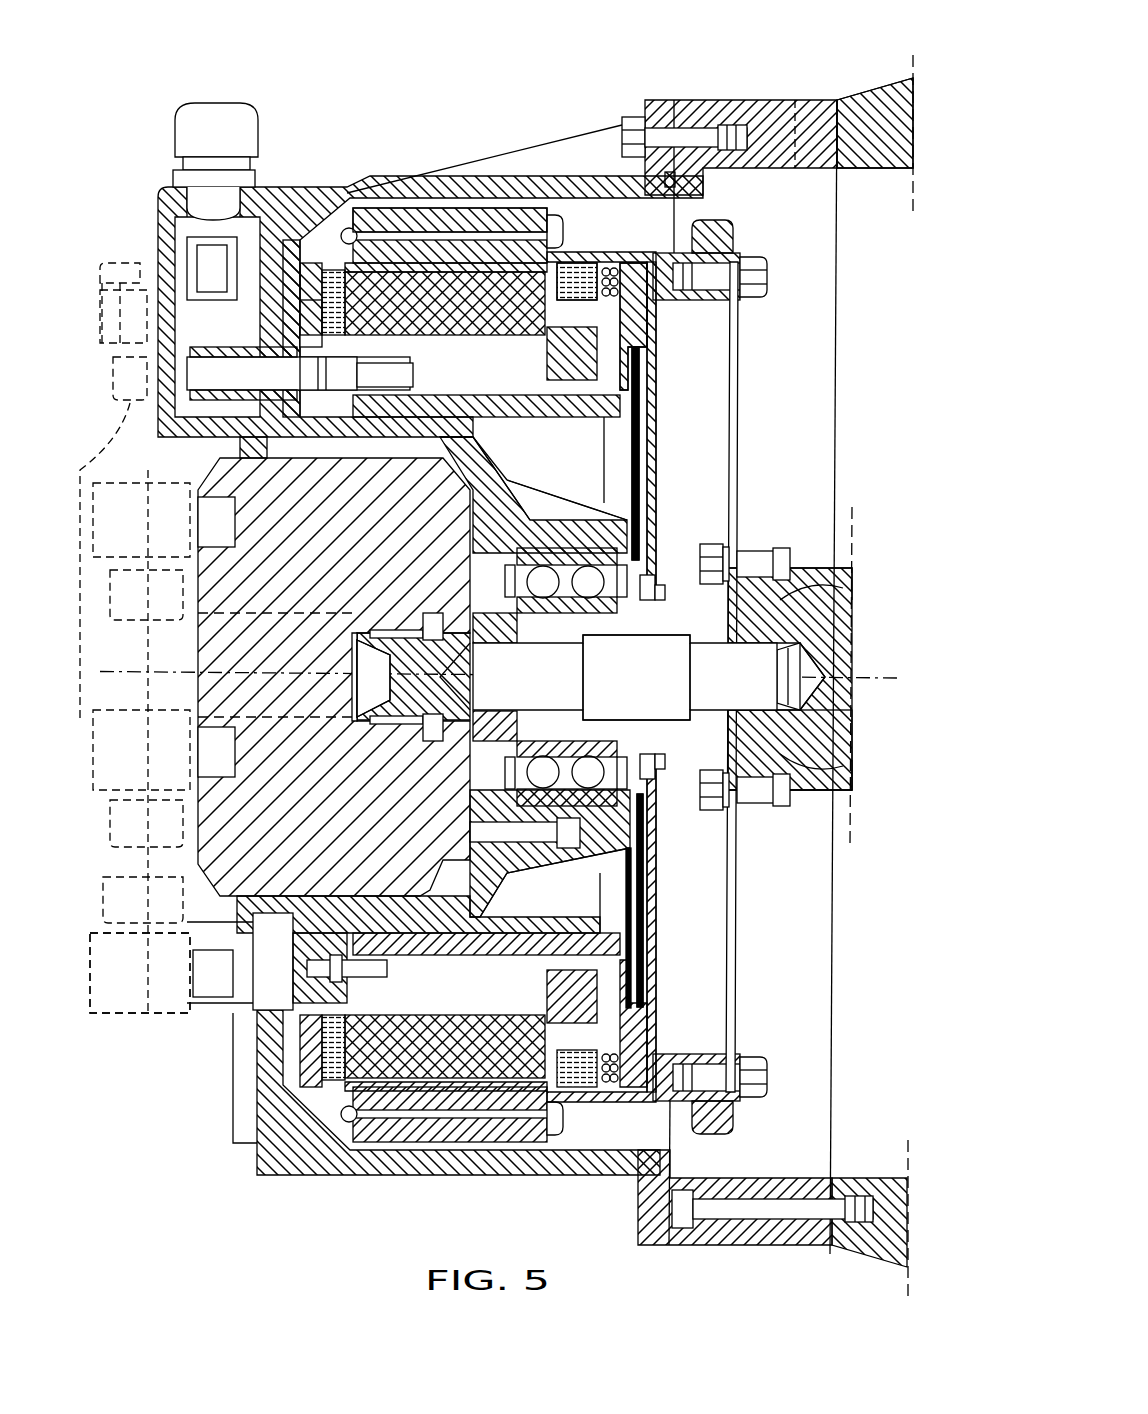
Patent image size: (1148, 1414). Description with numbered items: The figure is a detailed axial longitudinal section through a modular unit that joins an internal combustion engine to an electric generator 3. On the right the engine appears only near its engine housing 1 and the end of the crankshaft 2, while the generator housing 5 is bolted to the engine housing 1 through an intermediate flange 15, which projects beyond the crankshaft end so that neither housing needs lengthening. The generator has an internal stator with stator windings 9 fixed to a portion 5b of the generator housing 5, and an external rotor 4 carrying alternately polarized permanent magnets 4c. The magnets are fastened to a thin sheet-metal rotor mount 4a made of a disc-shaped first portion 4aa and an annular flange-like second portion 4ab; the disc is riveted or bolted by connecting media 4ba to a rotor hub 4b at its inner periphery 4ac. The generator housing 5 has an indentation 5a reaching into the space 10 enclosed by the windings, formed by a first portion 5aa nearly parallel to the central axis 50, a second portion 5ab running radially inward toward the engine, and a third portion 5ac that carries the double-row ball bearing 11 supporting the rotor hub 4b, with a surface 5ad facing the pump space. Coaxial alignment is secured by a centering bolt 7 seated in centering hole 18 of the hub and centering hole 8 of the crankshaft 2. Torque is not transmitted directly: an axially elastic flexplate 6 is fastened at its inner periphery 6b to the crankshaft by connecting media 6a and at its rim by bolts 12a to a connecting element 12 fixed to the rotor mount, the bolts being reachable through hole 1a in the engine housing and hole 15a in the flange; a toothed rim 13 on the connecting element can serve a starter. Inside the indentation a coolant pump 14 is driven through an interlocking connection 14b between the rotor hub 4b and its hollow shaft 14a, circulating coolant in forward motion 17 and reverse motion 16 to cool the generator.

The engine housing 1 is at (850, 100).
The hole 1a is at (878, 95).
The crankshaft 2 is at (835, 605).
The electric generator 3 is at (285, 90).
The rotor 4 is at (583, 245).
The rotor mount 4a is at (672, 335).
The first portion of the rotor mount 4aa is at (690, 395).
The second portion of the rotor mount 4ab is at (618, 254).
The inner periphery of the first portion 4ac is at (657, 583).
The rotor hub 4b is at (662, 608).
The connecting media 4ba is at (640, 768).
The permanent magnets 4c is at (452, 220).
The generator housing 5 is at (328, 186).
The indentation 5a is at (640, 525).
The first portion of the indentation 5aa is at (275, 460).
The second portion of the indentation 5ab is at (490, 462).
The third portion of the indentation 5ac is at (642, 490).
The surface 5ad is at (455, 795).
The portion of the generator housing 5b is at (297, 260).
The flexplate 6 is at (752, 406).
The connecting media 6a is at (753, 555).
The inner periphery of the flexplate 6b is at (845, 587).
The centering bolt 7 is at (830, 742).
The centering hole 8 is at (830, 707).
The stator windings 9 is at (580, 290).
The space 10 is at (577, 482).
The bearing 11 is at (652, 825).
The connecting element 12 is at (735, 300).
The bolts 12a is at (775, 277).
The toothed rim 13 is at (740, 244).
The coolant pump 14 is at (200, 657).
The shaft of the coolant pump 14a is at (195, 690).
The interlocking connection 14b is at (355, 632).
The intermediate flange 15 is at (762, 118).
The hole 15a is at (797, 100).
The reverse motion of the coolant 16 is at (110, 264).
The forward motion of the coolant 17 is at (122, 1005).
The centering hole 18 is at (465, 686).
The central axis 50 is at (815, 662).